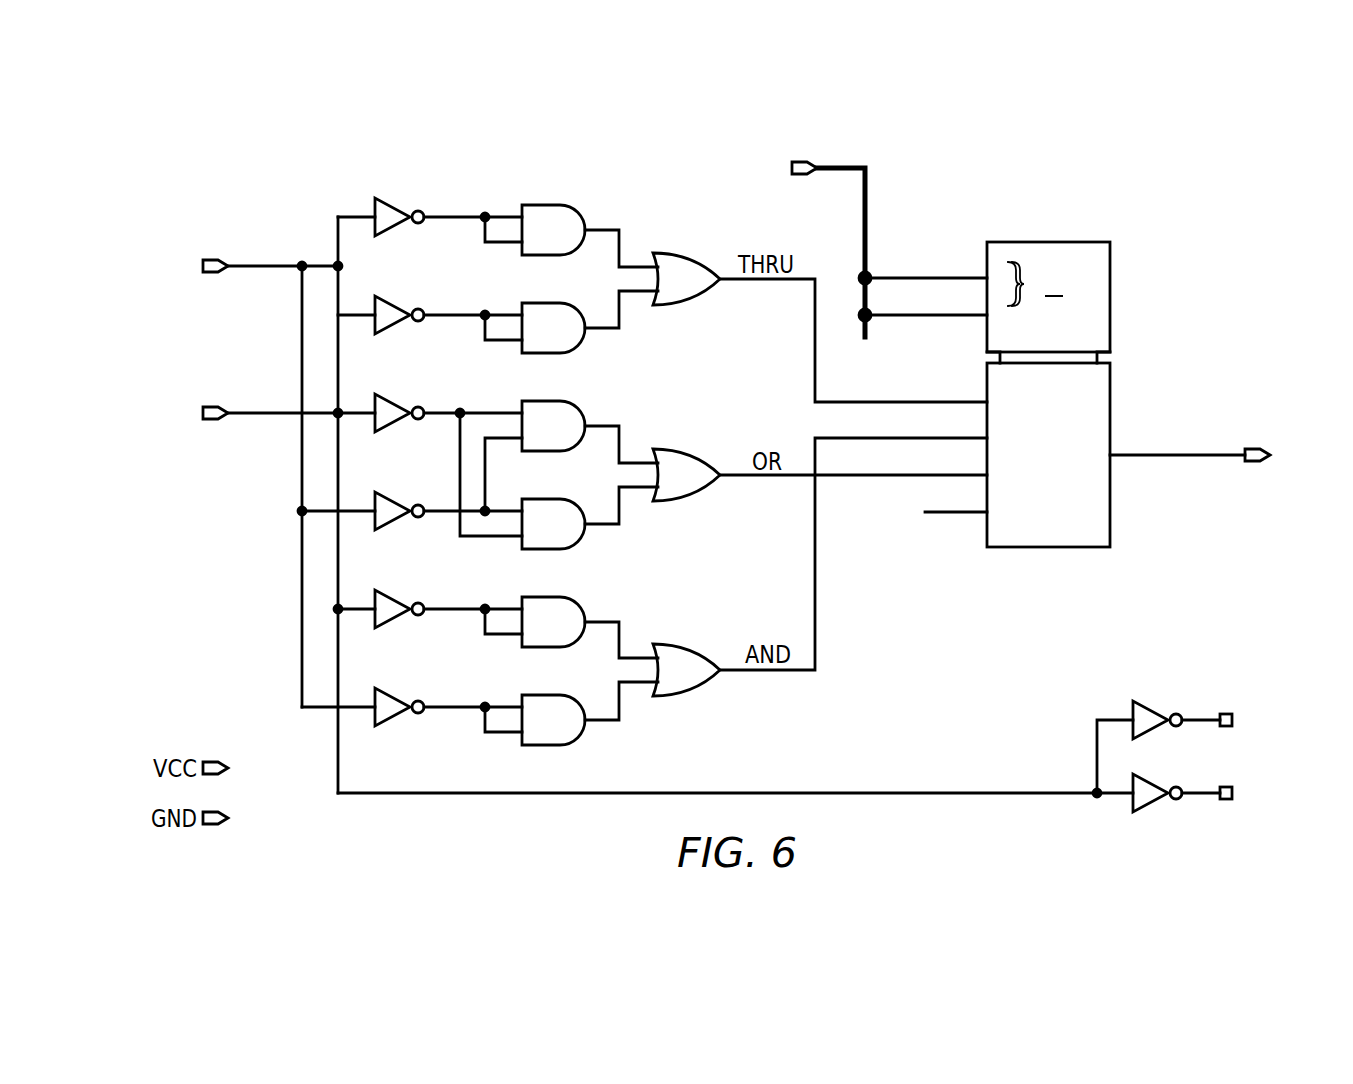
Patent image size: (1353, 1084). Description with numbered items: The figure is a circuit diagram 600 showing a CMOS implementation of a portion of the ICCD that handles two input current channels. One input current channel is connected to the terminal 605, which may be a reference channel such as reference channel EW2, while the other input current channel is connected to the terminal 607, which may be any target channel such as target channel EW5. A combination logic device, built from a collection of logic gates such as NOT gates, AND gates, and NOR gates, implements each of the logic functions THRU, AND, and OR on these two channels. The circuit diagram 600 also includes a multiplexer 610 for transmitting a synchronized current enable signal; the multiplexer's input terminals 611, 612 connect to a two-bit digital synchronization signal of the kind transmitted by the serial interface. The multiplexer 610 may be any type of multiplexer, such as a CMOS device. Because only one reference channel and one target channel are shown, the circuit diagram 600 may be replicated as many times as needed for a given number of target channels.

The circuit diagram 600 is at (1070, 145).
The terminal 605 is at (264, 263).
The terminal 607 is at (264, 416).
The multiplexer 610 is at (1110, 412).
The multiplexer input terminal 611 is at (957, 277).
The multiplexer input terminal 612 is at (957, 316).